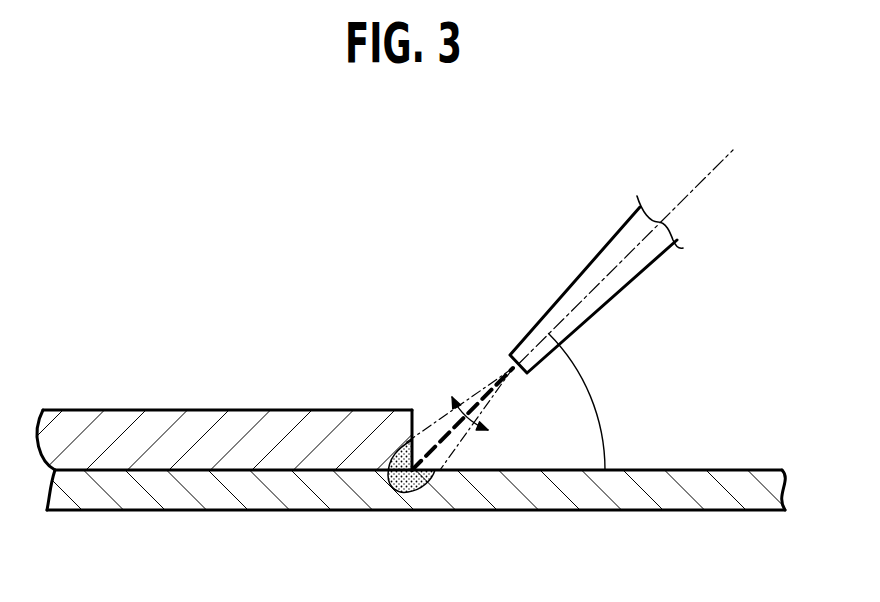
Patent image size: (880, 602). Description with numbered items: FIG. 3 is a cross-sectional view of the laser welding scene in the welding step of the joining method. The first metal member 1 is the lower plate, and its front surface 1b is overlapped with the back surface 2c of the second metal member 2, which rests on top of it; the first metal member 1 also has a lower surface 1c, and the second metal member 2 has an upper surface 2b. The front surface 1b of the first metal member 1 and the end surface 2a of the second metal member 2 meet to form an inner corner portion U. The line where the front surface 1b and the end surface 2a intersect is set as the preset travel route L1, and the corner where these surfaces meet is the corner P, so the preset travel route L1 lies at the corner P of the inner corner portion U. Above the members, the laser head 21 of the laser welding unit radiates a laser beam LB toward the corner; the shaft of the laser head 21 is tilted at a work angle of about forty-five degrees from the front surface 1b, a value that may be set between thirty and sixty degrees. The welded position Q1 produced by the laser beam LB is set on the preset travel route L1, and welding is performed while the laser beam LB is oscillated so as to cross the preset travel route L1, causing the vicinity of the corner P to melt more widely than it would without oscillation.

The first metal member 1 is at (435, 496).
The front surface of the first metal member 1b is at (650, 470).
The lower surface of lower plate 1c is at (598, 512).
The second metal member 2 is at (240, 454).
The end surface of the second metal member 2a is at (416, 408).
The upper surface of upper plate 2b is at (212, 410).
The back surface of the second metal member 2c is at (192, 476).
The laser head 21 is at (600, 258).
The laser beam LB is at (474, 388).
The inner corner portion U is at (470, 468).
The preset travel route L1 is at (437, 502).
The welded position Q1 is at (437, 502).
The corner P is at (407, 494).